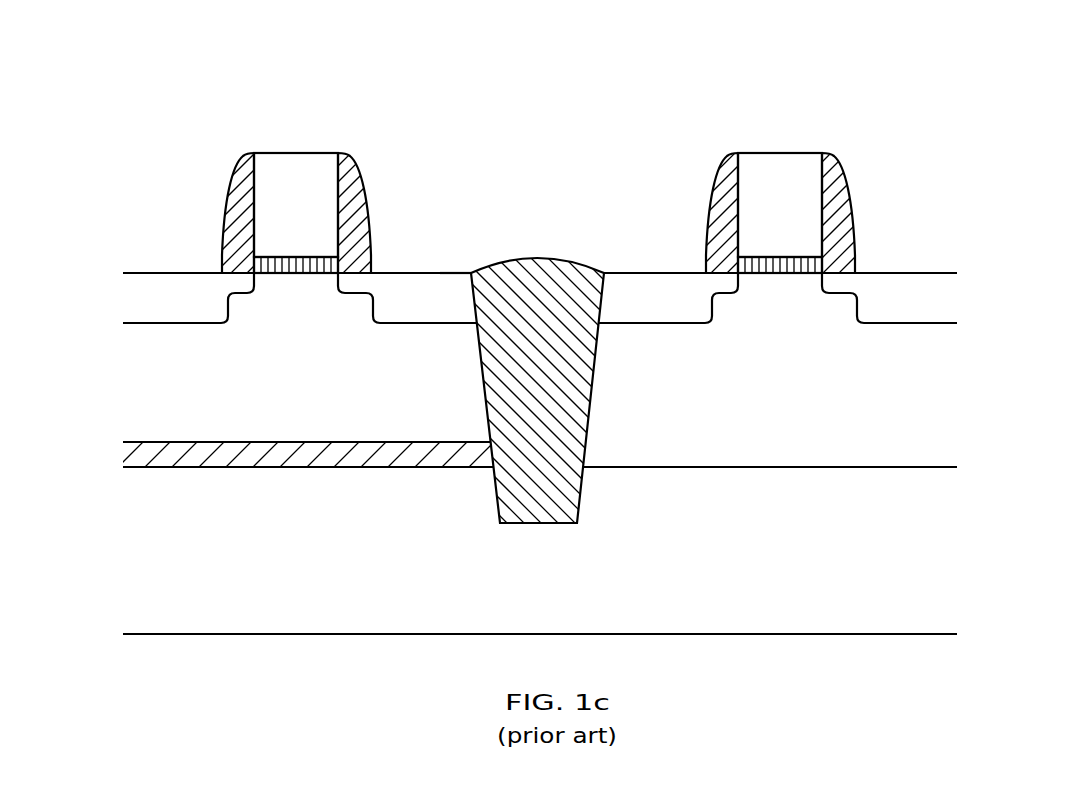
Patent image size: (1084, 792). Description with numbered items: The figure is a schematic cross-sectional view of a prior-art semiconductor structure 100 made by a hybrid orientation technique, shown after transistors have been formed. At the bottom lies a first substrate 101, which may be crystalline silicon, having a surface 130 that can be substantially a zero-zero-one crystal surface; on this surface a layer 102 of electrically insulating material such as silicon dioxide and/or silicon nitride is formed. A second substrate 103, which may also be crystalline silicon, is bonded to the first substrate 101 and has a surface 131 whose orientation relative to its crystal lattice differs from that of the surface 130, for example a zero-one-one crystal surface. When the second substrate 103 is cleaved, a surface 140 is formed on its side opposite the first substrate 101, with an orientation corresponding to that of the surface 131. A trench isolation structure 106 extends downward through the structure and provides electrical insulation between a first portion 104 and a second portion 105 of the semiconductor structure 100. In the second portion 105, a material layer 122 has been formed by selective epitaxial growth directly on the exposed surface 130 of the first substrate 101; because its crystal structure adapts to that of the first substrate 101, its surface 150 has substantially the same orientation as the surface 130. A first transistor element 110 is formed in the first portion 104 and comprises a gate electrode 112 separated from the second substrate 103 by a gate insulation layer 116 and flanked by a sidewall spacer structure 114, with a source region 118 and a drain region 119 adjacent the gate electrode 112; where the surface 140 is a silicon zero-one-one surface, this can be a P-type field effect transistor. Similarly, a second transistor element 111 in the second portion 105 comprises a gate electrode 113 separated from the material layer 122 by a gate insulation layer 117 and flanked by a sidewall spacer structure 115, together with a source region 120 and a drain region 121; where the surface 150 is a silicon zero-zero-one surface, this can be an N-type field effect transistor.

The semiconductor structure 100 is at (103, 123).
The first substrate 101 is at (130, 552).
The layer 102 is at (130, 445).
The second substrate 103 is at (130, 356).
The first portion 104 is at (252, 92).
The second portion 105 is at (794, 92).
The trench isolation structure 106 is at (538, 258).
The first transistor element 110 is at (237, 150).
The second transistor element 111 is at (720, 150).
The gate electrode 112 is at (305, 153).
The gate electrode 113 is at (767, 153).
The sidewall spacer structure 114 is at (240, 163).
The sidewall spacer structure 115 is at (724, 165).
The gate insulation layer 116 is at (308, 275).
The gate insulation layer 117 is at (768, 275).
The source region 118 is at (168, 273).
The drain region 119 is at (402, 273).
The source region 120 is at (620, 273).
The drain region 121 is at (908, 273).
The material layer 122 is at (693, 400).
The surface 130 is at (777, 466).
The surface 131 is at (192, 442).
The surface 140 is at (448, 273).
The surface 150 is at (670, 273).